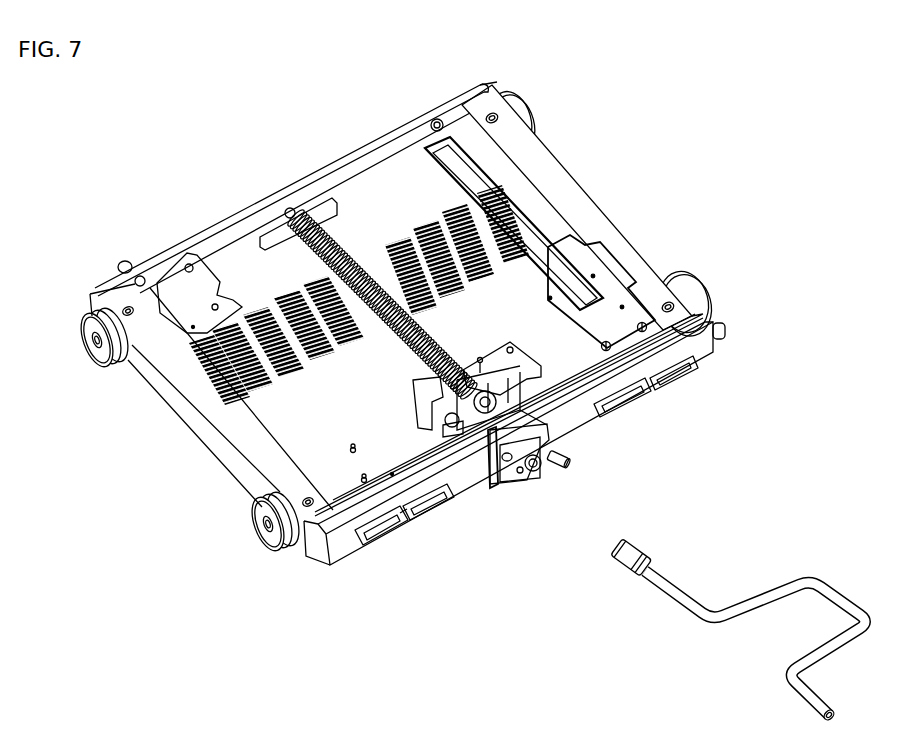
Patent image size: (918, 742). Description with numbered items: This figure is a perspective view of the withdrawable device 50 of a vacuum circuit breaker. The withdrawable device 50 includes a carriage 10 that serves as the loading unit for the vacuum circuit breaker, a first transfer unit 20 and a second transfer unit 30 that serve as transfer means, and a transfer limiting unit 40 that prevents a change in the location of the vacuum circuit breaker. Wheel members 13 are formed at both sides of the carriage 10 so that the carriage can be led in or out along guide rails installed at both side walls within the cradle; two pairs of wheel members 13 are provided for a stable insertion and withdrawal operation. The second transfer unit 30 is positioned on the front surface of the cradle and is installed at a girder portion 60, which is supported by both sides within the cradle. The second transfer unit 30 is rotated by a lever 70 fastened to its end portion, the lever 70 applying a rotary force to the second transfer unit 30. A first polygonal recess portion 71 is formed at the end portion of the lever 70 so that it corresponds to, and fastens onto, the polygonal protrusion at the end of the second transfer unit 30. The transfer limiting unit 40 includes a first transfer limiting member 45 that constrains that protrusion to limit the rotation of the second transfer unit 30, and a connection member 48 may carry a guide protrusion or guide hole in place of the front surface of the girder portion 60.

The withdrawable device 50 is at (155, 173).
The carriage 10 is at (335, 175).
The wheel members 13 is at (522, 108).
The first transfer unit 20 is at (510, 373).
The second transfer unit 30 is at (437, 330).
The transfer limiting unit 40 is at (530, 487).
The first transfer limiting member 45 is at (560, 454).
The connection member 48 is at (497, 480).
The girder portion 60 is at (357, 553).
The lever 70 is at (847, 575).
The first polygonal recess portion 71 is at (640, 548).